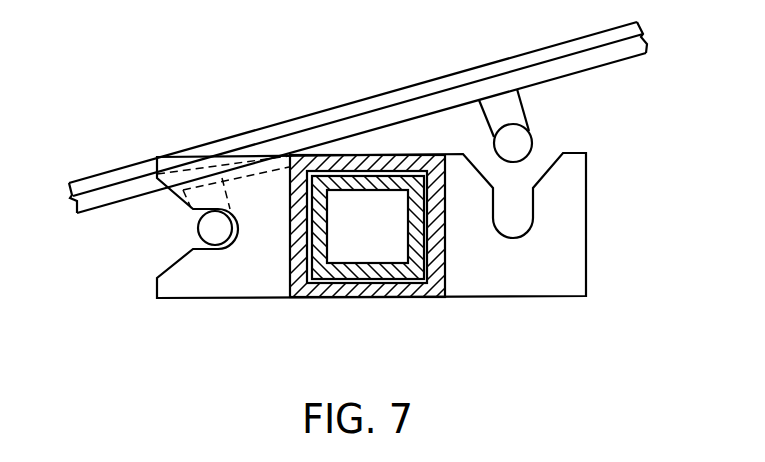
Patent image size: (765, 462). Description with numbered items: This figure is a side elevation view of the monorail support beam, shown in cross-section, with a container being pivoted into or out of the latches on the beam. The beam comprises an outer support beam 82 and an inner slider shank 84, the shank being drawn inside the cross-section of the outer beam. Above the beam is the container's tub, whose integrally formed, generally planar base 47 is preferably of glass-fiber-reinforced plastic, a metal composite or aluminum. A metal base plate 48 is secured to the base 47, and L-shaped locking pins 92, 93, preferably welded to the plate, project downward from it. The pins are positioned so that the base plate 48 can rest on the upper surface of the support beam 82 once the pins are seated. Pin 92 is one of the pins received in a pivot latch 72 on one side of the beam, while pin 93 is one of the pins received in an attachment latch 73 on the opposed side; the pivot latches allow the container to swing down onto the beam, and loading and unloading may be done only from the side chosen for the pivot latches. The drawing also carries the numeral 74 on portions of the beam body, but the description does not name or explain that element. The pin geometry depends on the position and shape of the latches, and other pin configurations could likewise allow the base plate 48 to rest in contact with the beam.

The planar base 47 is at (300, 117).
The metal base plate 48 is at (627, 58).
The pivot latch 72 is at (157, 297).
The attachment latch 73 is at (563, 298).
The block portions 74 is at (222, 295).
The outer support beam 82 is at (433, 295).
The inner slider shank 84 is at (352, 190).
The L-shaped locking pin 92 is at (192, 217).
The L-shaped locking pin 93 is at (522, 103).